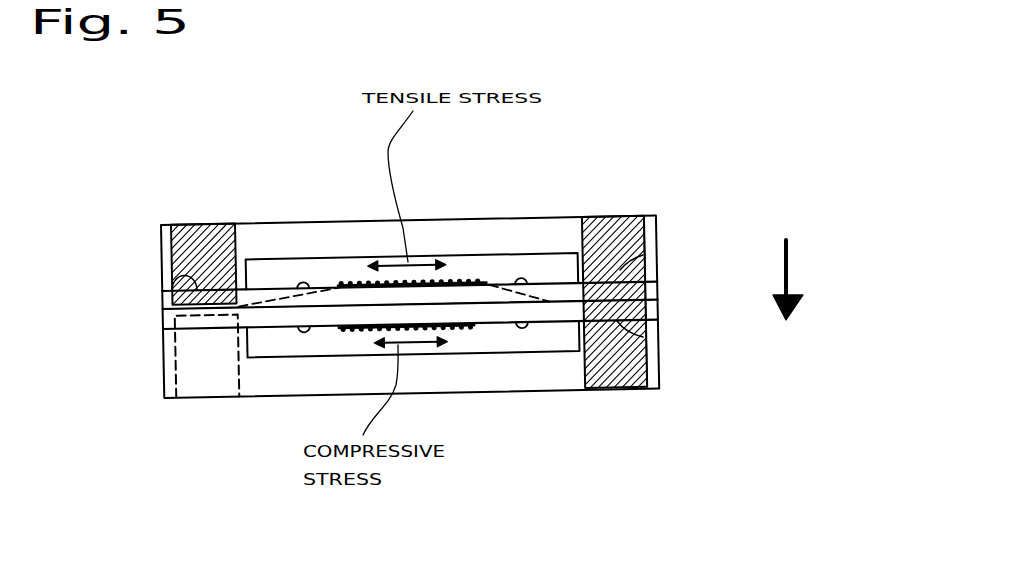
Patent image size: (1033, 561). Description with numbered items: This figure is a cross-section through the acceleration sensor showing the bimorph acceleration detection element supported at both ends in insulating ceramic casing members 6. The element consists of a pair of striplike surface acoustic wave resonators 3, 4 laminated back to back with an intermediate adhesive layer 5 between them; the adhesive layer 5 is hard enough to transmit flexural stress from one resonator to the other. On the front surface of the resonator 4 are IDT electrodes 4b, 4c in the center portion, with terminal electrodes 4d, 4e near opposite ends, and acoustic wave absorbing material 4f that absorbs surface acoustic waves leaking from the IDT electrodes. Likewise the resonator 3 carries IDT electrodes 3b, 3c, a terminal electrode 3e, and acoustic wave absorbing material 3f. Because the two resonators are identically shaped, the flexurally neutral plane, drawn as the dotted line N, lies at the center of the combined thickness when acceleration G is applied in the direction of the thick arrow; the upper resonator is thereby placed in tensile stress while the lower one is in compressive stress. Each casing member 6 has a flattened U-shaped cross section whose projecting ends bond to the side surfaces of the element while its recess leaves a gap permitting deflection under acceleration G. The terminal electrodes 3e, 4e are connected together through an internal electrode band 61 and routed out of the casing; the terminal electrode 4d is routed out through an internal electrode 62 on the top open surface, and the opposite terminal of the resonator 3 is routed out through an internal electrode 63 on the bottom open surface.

The surface acoustic wave resonator 3 is at (270, 326).
The surface acoustic wave resonator 4 is at (269, 288).
The adhesive layer 5 is at (525, 300).
The casing member 6 is at (357, 235).
The internal electrode band 61 is at (604, 226).
The internal electrode 62 is at (195, 232).
The internal electrode 63 is at (172, 352).
The IDT electrode 3b is at (449, 410).
The IDT electrode 3c is at (465, 327).
The terminal electrode 3e is at (643, 337).
The acoustic wave absorbing material 3f is at (522, 331).
The IDT electrode 4b is at (422, 227).
The IDT electrode 4c is at (451, 280).
The terminal electrode 4d is at (172, 283).
The terminal electrode 4e is at (643, 255).
The acoustic wave absorbing material 4f is at (308, 282).
The flexurally neutral plane N is at (495, 290).
The acceleration G is at (802, 280).